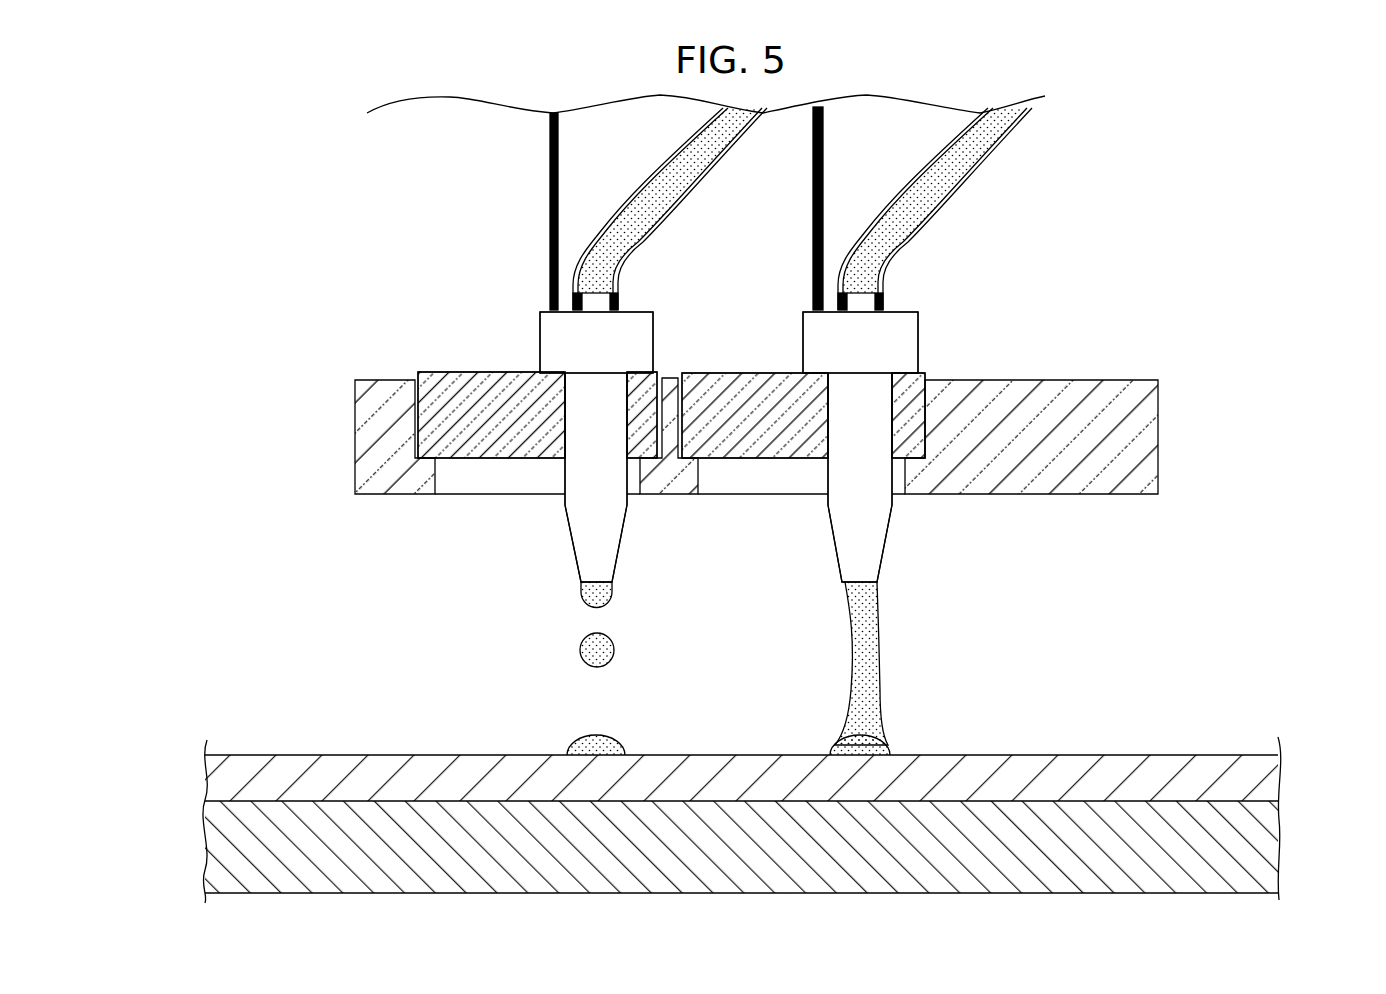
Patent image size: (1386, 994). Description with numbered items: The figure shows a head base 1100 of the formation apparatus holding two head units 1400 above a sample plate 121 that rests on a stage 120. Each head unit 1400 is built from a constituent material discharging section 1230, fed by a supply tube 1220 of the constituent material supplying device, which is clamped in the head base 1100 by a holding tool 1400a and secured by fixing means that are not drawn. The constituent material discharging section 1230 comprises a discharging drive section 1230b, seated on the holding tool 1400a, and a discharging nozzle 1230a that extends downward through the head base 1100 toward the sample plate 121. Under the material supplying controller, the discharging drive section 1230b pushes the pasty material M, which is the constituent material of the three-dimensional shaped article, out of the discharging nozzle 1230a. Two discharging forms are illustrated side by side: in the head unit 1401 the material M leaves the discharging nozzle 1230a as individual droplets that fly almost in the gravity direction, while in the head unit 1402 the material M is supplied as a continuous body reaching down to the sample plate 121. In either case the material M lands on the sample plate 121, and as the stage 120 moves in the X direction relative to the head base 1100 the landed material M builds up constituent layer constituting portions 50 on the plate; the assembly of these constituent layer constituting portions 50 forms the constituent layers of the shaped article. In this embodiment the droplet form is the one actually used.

The supply tube 1220 is at (980, 162).
The constituent material discharging section 1230 is at (275, 268).
The discharging nozzle 1230a is at (590, 495).
The discharging drive section 1230b is at (568, 348).
The head unit 1400 is at (692, 373).
The head unit at the first row 1401 is at (192, 293).
The head unit at the second row 1402 is at (1187, 193).
The holding tool 1400a is at (437, 427).
The head base 1100 is at (1110, 440).
The material M is at (618, 645).
The constituent layer constituting portion 50 is at (830, 752).
The sample plate 121 is at (1262, 768).
The stage 120 is at (1266, 826).